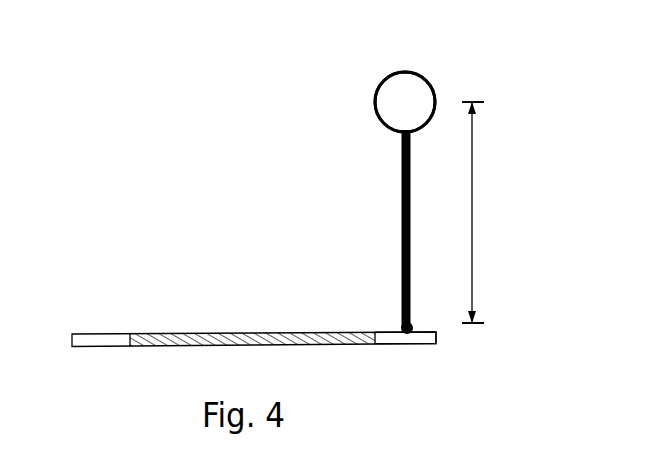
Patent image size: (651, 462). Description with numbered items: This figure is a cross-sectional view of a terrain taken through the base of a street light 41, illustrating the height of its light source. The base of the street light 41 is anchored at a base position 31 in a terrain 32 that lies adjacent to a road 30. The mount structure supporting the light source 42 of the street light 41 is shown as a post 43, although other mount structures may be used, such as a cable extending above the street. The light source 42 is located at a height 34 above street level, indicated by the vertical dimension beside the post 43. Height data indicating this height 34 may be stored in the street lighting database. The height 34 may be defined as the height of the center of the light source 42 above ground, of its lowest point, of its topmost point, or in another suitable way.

The road 30 is at (275, 343).
The base position 31 is at (413, 335).
The terrain 32 is at (99, 345).
The height 34 is at (472, 180).
The street light 41 is at (362, 90).
The light source 42 is at (428, 80).
The post 43 is at (402, 232).